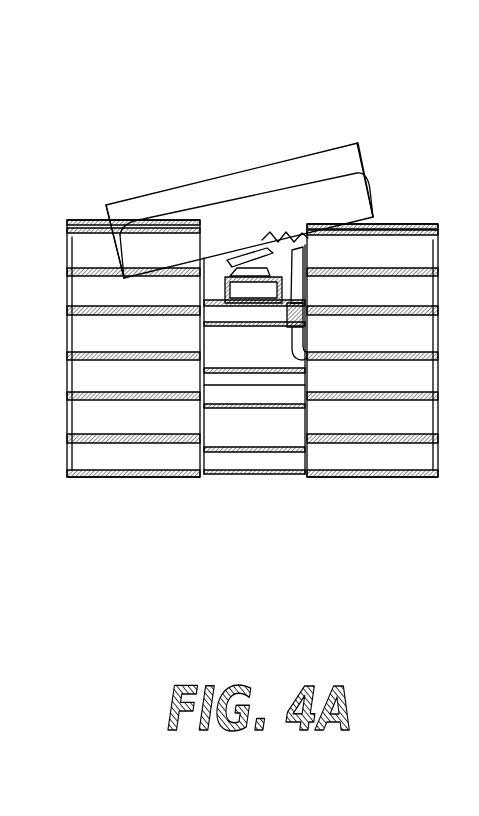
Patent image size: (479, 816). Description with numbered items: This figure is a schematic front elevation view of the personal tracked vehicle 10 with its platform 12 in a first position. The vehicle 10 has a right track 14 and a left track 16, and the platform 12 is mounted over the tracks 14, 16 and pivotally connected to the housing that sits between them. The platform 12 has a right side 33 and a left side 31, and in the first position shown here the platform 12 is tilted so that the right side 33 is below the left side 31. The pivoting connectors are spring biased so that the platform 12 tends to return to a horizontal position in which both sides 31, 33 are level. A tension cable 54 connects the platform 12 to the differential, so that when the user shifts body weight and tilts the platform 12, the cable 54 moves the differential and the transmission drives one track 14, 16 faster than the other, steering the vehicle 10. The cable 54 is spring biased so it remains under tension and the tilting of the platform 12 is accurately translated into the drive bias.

The personal tracked vehicle 10 is at (190, 99).
The platform 12 is at (267, 183).
The right track 14 is at (170, 463).
The left track 16 is at (387, 465).
The left side 31 is at (340, 152).
The right side 33 is at (122, 208).
The tension cable 54 is at (290, 350).